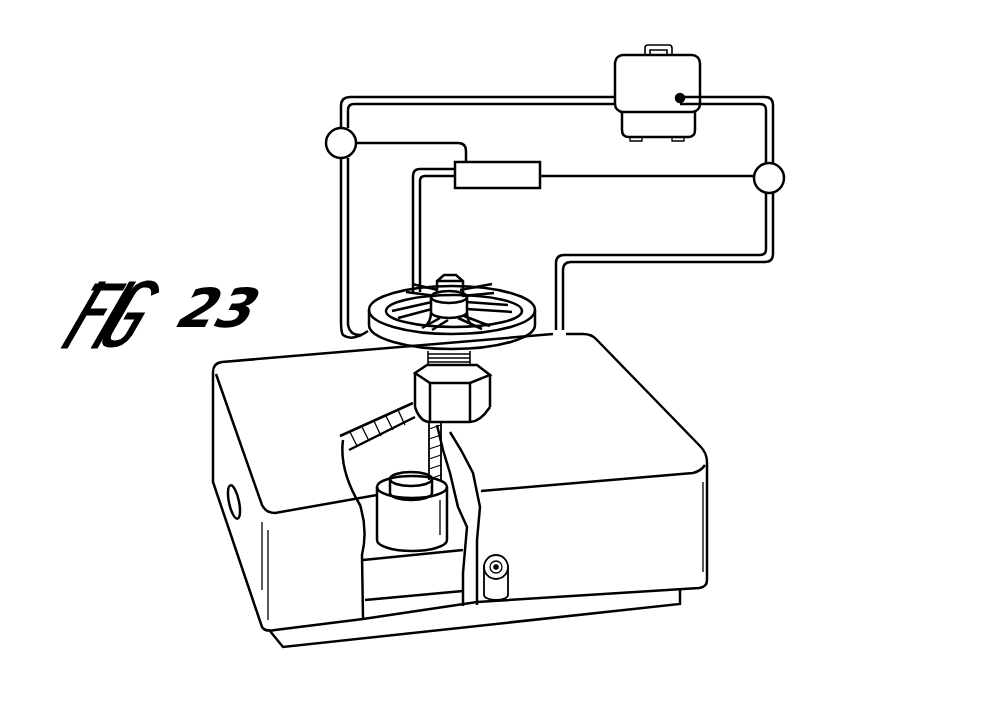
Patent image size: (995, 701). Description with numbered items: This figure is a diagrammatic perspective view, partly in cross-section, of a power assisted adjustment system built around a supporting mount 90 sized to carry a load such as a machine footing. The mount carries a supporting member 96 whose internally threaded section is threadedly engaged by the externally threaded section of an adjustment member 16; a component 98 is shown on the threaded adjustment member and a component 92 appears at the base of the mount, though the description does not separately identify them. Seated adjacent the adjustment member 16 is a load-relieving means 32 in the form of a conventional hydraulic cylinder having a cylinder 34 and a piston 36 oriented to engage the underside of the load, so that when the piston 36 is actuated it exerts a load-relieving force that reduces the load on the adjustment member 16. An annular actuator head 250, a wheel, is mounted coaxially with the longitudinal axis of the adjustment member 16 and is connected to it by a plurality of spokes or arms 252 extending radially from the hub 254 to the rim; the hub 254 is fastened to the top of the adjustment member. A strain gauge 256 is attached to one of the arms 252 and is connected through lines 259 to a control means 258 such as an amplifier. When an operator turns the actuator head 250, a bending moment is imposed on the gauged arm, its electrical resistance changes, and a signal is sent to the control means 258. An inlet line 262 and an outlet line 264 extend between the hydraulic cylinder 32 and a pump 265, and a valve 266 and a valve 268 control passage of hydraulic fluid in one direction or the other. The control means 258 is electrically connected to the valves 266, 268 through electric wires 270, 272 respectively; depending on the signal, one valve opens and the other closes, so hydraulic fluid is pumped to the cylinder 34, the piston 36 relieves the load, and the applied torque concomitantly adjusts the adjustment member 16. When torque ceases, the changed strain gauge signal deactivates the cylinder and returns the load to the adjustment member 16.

The adjustment member 16 is at (500, 366).
The load-relieving means 32 is at (366, 466).
The cylinder 34 is at (388, 504).
The piston 36 is at (410, 476).
The supporting mount 90 is at (694, 414).
The base plate 92 is at (704, 590).
The supporting member 96 is at (630, 379).
The nut 98 is at (416, 402).
The annular actuator head 250 is at (338, 323).
The spokes or arms 252 is at (478, 293).
The hub 254 is at (457, 297).
The strain gauge 256 is at (388, 312).
The control means 258 is at (505, 162).
The lines 259 is at (412, 205).
The inlet line 262 is at (405, 96).
The outlet line 264 is at (778, 126).
The pump 265 is at (680, 52).
The valve 266 is at (786, 172).
The valve 268 is at (333, 134).
The electric wire 270 is at (690, 178).
The electric wire 272 is at (446, 142).